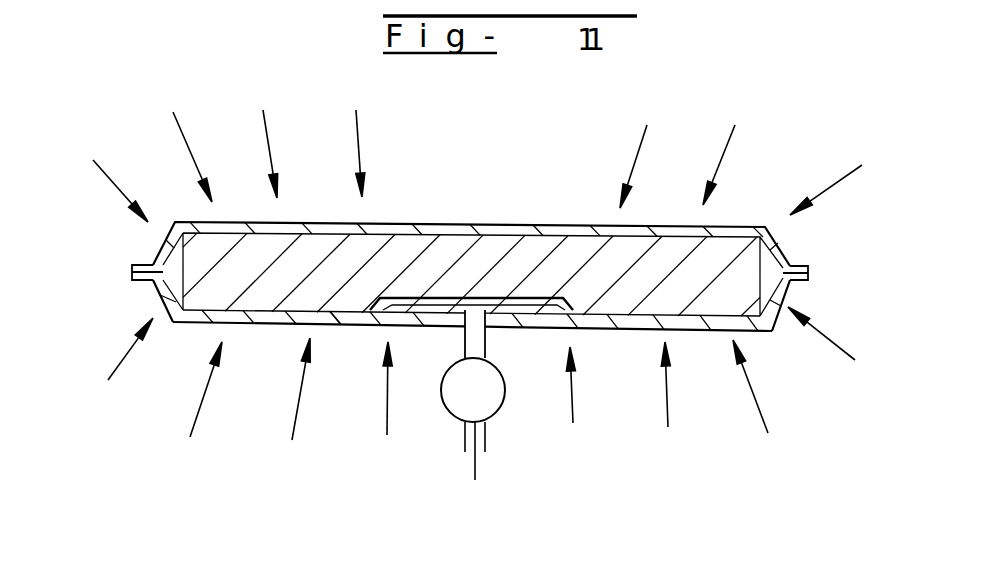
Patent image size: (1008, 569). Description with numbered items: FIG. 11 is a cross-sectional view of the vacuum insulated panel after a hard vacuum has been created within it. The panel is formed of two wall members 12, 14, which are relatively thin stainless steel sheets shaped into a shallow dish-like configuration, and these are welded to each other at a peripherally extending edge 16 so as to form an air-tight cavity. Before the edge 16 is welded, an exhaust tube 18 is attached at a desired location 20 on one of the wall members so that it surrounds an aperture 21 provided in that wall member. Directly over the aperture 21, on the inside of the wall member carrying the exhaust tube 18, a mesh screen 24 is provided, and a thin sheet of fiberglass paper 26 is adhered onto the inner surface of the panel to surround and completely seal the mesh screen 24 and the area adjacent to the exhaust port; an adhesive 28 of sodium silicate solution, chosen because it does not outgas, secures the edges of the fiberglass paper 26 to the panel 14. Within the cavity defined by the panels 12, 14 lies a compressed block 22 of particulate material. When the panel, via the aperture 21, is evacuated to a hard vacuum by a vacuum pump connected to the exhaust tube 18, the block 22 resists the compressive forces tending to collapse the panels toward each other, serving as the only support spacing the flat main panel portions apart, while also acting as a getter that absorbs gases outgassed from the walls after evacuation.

The wall member 12 is at (548, 224).
The wall member 14 is at (268, 323).
The peripherally extending edge 16 is at (132, 273).
The exhaust tube 18 is at (462, 345).
The location 20 is at (490, 325).
The aperture 21 is at (476, 325).
The compressed block 22 is at (313, 248).
The mesh screen 24 is at (548, 325).
The fiberglass paper 26 is at (452, 419).
The adhesive 28 is at (362, 324).